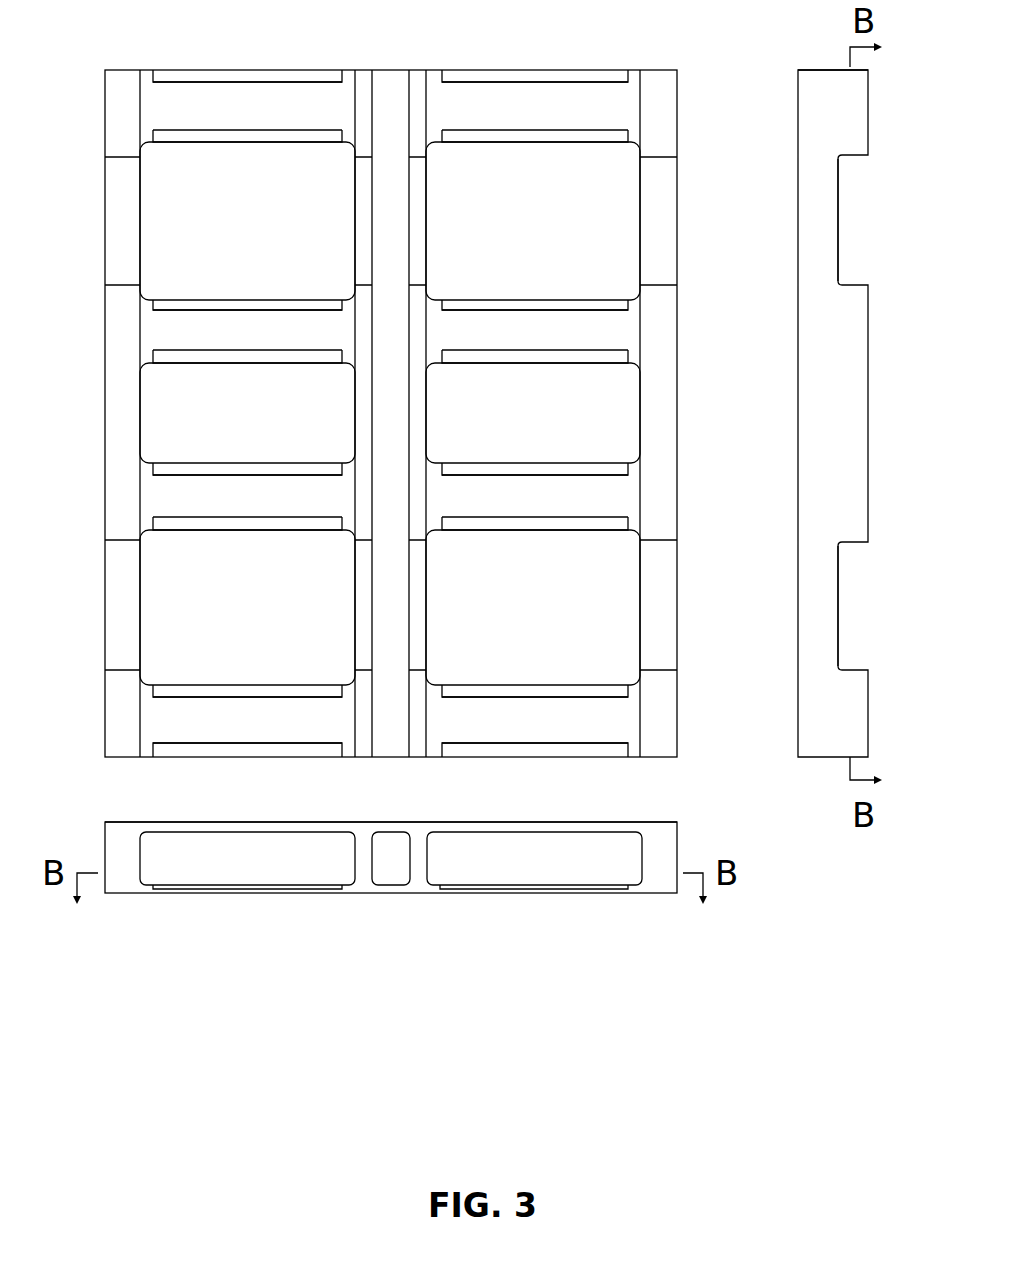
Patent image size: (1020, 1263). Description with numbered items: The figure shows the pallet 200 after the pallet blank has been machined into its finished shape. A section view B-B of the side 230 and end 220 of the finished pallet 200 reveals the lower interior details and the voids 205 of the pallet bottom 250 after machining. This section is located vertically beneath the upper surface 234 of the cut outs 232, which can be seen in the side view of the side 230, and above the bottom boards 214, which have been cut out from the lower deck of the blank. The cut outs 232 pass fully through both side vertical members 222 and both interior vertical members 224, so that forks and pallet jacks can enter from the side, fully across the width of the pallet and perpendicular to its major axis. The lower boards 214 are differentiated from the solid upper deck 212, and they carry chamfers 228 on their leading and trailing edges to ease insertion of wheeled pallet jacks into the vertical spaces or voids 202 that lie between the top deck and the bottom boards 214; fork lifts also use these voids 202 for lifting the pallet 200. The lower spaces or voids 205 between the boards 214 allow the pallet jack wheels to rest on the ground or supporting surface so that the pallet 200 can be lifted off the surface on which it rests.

The pallet bottom 250 is at (391, 386).
The voids 205 is at (247, 413).
The bottom boards 214 is at (523, 110).
The cut outs 232 is at (652, 218).
The chamfers 228 is at (582, 472).
The side vertical members 222 is at (663, 742).
The interior vertical members 224 is at (418, 742).
The solid upper deck 212 is at (268, 827).
The end 220 is at (391, 887).
The voids 202 is at (391, 858).
The pallet 200 is at (833, 487).
The side 230 is at (875, 85).
The upper surface 234 is at (840, 197).